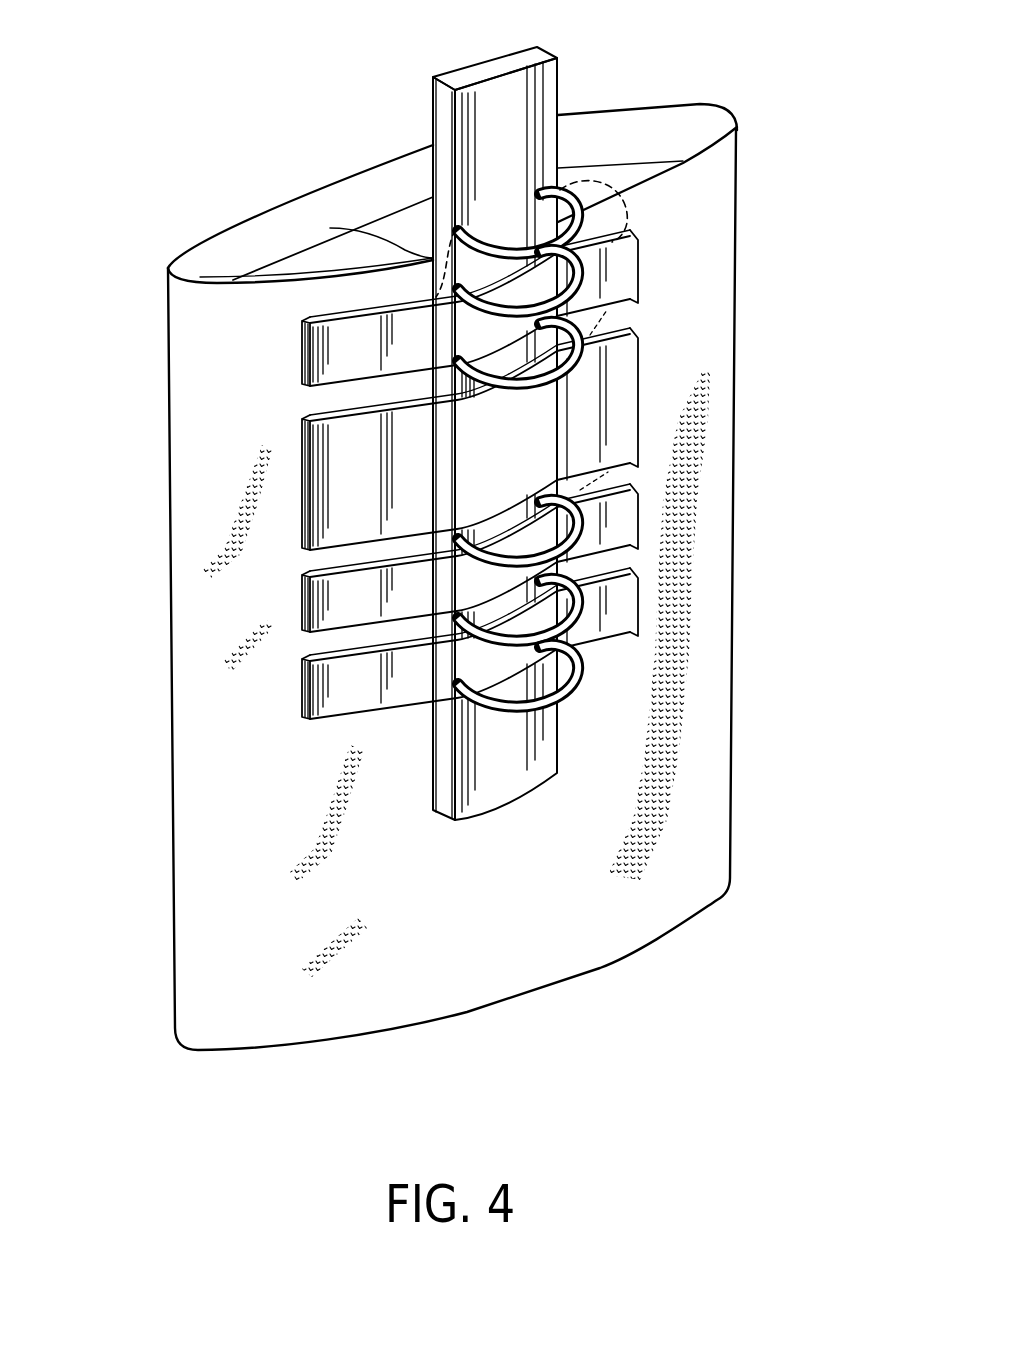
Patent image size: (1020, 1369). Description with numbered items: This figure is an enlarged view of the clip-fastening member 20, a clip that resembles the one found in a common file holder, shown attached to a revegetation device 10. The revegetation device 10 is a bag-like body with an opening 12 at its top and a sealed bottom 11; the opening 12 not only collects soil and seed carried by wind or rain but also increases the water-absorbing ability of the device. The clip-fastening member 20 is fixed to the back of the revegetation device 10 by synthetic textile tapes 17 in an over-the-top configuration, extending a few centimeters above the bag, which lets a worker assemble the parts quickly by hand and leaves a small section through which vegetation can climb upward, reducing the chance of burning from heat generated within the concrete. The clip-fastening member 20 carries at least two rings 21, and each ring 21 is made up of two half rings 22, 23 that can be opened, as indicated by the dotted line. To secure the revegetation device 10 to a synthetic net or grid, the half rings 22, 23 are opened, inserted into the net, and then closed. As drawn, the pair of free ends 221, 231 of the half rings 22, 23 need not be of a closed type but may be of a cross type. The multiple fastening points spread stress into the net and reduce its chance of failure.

The revegetation device 10 is at (447, 570).
The sealed bottom 11 is at (598, 969).
The opening 12 is at (383, 193).
The synthetic textile tapes 17 is at (637, 258).
The clip-fastening member 20 is at (340, 410).
The ring 21 is at (612, 398).
The half ring 22 is at (458, 706).
The half ring 23 is at (557, 650).
The free end 221 is at (330, 228).
The free end 231 is at (593, 187).